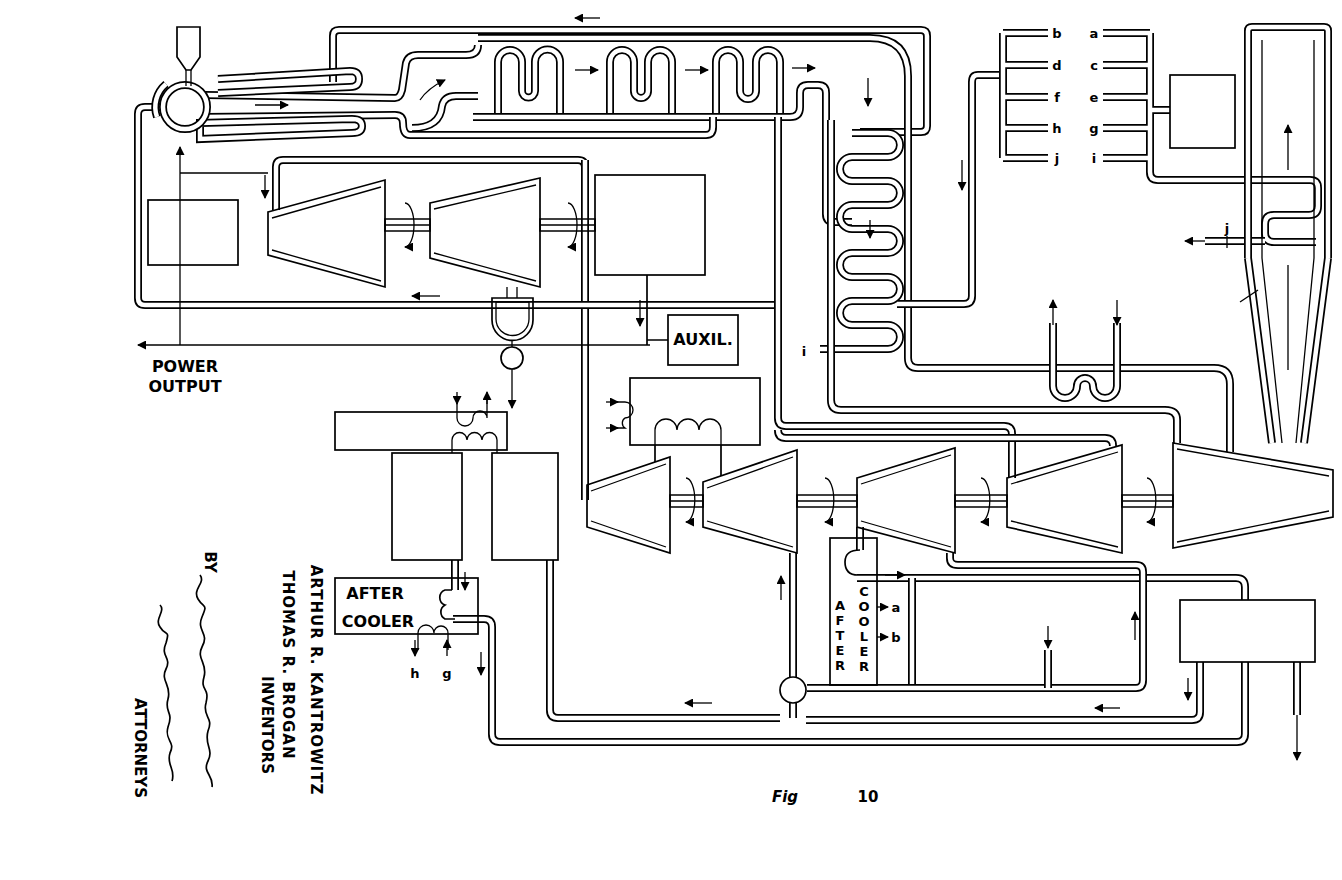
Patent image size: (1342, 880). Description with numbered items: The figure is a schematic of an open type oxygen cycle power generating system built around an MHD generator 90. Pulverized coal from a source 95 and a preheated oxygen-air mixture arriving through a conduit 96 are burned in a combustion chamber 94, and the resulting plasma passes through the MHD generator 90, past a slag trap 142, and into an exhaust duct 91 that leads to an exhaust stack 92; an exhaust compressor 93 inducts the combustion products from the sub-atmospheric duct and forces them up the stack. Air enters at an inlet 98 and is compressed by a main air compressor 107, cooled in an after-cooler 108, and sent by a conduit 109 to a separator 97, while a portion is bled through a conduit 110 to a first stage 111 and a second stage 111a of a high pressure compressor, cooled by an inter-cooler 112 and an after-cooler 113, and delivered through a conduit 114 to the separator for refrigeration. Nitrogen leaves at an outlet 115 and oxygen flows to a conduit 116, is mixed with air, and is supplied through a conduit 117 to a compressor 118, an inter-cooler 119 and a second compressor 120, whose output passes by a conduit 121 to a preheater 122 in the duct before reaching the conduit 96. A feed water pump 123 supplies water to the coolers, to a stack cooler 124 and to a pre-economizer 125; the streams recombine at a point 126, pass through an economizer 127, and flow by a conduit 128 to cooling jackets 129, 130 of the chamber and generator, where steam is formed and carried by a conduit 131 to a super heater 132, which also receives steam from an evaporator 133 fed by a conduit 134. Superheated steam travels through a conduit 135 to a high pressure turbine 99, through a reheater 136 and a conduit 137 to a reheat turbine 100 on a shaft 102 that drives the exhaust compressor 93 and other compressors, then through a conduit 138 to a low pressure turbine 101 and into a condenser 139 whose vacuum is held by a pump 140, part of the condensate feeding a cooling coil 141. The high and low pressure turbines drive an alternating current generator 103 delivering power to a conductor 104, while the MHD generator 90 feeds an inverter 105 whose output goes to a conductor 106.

The MHD generator 90 is at (327, 112).
The exhaust duct 91 is at (745, 118).
The exhaust stack 92 is at (1286, 300).
The exhaust compressor 93 is at (1186, 529).
The combustion chamber 94 is at (175, 115).
The source of pulverized coal 95 is at (177, 40).
The conduit 96 is at (193, 131).
The separator 97 is at (1236, 652).
The air inlet 98 is at (1050, 617).
The high pressure turbine 99 is at (348, 271).
The reheat turbine 100 is at (1094, 534).
The low pressure turbine 101 is at (496, 271).
The shaft 102 is at (825, 490).
The alternating current generator 103 is at (637, 260).
The conductor 104 is at (648, 290).
The inverter 105 is at (181, 252).
The conductor 106 is at (182, 278).
The main air compressor 107 is at (923, 534).
The after-cooler 108 is at (866, 548).
The conduit 109 is at (958, 582).
The conduit 110 is at (915, 650).
The first stage of high pressure compressor 111 is at (560, 548).
The second stage of high pressure compressor 111a is at (395, 535).
The inter-cooler 112 is at (414, 437).
The after-cooler 113 is at (478, 595).
The conduit 114 is at (496, 670).
The nitrogen outlet 115 is at (1300, 718).
The conduit 116 is at (958, 718).
The conduit 117 is at (795, 590).
The compressor 118 is at (764, 531).
The inter-cooler 119 is at (677, 440).
The second compressor 120 is at (634, 534).
The conduit 121 is at (589, 352).
The preheater 122 is at (666, 95).
The feed water pump 123 is at (1192, 141).
The stack cooler 124 is at (1290, 211).
The pre-economizer 125 is at (852, 353).
The recombination point 126 is at (910, 302).
The economizer 127 is at (870, 244).
The conduit 128 is at (712, 303).
The cooling jacket 129 is at (156, 91).
The cooling jacket 130 is at (272, 73).
The conduit 131 is at (380, 30).
The super heater 132 is at (475, 66).
The evaporator 133 is at (856, 133).
The conduit 134 is at (803, 221).
The conduit 135 is at (281, 188).
The reheater 136 is at (782, 58).
The conduit 137 is at (783, 383).
The conduit 138 is at (1020, 438).
The condenser 139 is at (502, 330).
The pump 140 is at (500, 358).
The cooling coil 141 is at (1075, 368).
The slag trap 142 is at (424, 116).